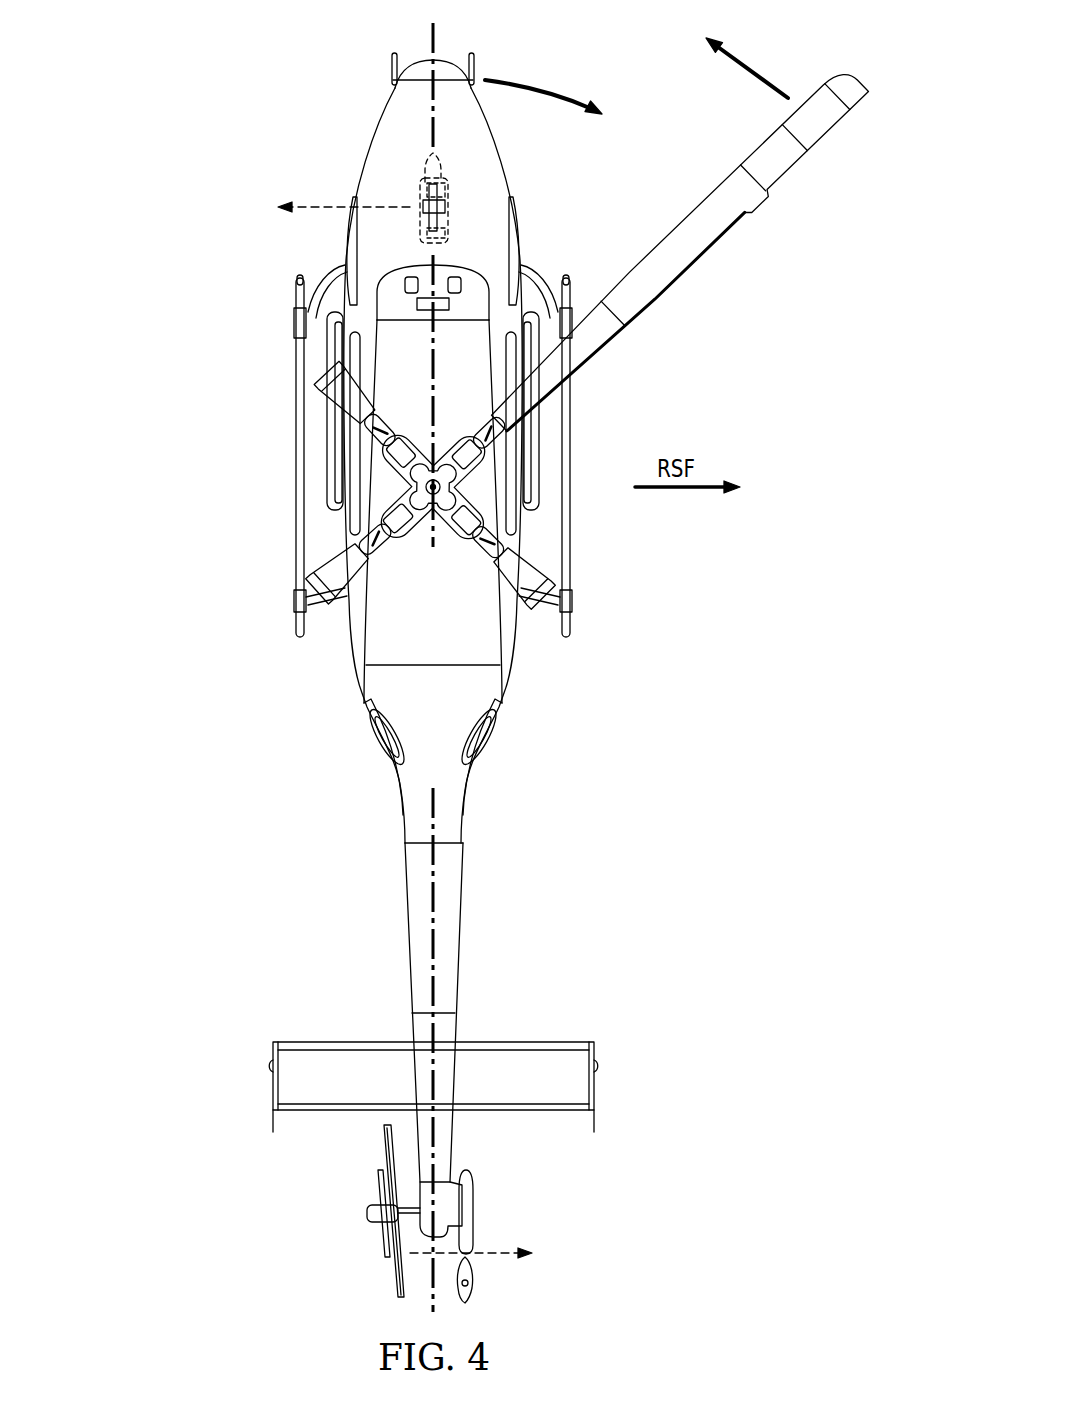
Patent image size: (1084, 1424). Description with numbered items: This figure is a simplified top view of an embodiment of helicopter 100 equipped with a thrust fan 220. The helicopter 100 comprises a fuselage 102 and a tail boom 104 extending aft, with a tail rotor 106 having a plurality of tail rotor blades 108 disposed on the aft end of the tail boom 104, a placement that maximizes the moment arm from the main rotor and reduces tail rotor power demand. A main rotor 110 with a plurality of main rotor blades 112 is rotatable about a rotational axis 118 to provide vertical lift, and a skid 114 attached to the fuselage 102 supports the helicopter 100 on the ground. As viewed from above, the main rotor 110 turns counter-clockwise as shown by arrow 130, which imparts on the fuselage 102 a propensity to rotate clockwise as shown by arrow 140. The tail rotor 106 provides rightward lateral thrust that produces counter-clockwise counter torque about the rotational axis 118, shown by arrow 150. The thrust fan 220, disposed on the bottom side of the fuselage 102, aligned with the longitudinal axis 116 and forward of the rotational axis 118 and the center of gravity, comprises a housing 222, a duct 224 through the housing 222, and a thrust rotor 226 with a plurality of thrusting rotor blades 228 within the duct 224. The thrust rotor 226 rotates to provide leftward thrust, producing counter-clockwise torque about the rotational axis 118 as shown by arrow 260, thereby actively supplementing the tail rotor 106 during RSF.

The helicopter 100 is at (178, 50).
The fuselage 102 is at (452, 62).
The tail boom 104 is at (462, 928).
The tail rotor 106 is at (354, 1225).
The tail rotor blades 108 is at (384, 1145).
The main rotor 110 is at (417, 541).
The main rotor blades 112 is at (785, 178).
The skid 114 is at (572, 535).
The longitudinal axis 116 is at (432, 870).
The rotational axis 118 is at (405, 492).
The arrow 130 is at (762, 68).
The arrow 140 is at (535, 83).
The arrow 150 is at (498, 1257).
The thrust fan 220 is at (429, 187).
The housing 222 is at (420, 168).
The duct 224 is at (445, 250).
The thrust rotor 226 is at (457, 204).
The thrusting rotor blades 228 is at (448, 180).
The arrow 260 is at (322, 204).